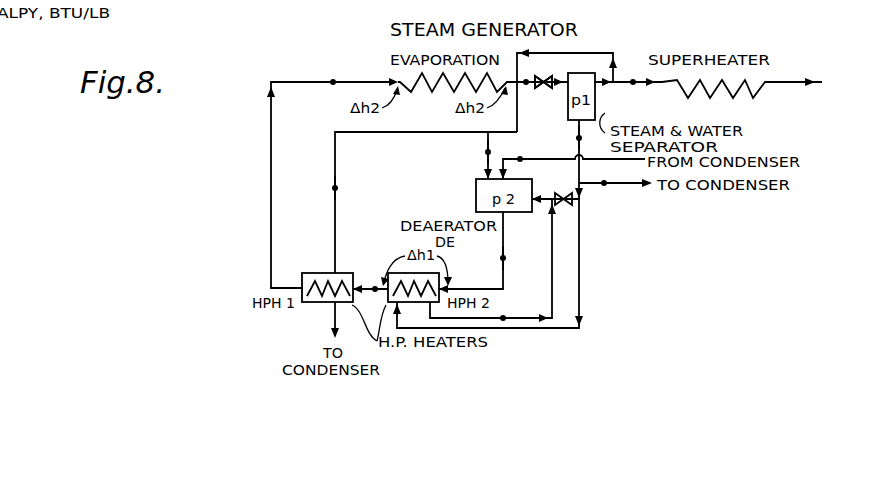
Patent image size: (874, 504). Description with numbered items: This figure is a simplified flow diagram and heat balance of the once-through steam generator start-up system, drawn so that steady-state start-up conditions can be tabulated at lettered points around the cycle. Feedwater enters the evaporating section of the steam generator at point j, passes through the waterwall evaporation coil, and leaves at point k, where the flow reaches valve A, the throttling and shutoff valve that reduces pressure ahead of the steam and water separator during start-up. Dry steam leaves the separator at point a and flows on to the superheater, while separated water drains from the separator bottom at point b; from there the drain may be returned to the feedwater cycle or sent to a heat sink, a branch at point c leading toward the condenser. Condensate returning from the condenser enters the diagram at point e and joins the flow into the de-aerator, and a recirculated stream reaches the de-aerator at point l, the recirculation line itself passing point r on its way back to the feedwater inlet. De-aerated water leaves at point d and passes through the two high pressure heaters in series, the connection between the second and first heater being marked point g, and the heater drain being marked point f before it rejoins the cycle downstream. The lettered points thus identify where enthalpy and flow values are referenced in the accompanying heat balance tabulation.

The feedwater inlet point to evaporation section j is at (331, 79).
The valve A is at (543, 75).
The evaporation outlet point before valve k is at (527, 86).
The steam outlet point to superheater a is at (628, 94).
The separator water outlet point b is at (577, 138).
The condensate return point from condenser to deaerator e is at (521, 158).
The recirculation water point to deaerator l is at (486, 152).
The drain point to condenser c is at (604, 185).
The recirculation line point r is at (337, 188).
The deaerator outlet point to HPH2 d is at (504, 257).
The point between HPH2 and HPH1 g is at (375, 286).
The HPH2 drain point f is at (509, 310).